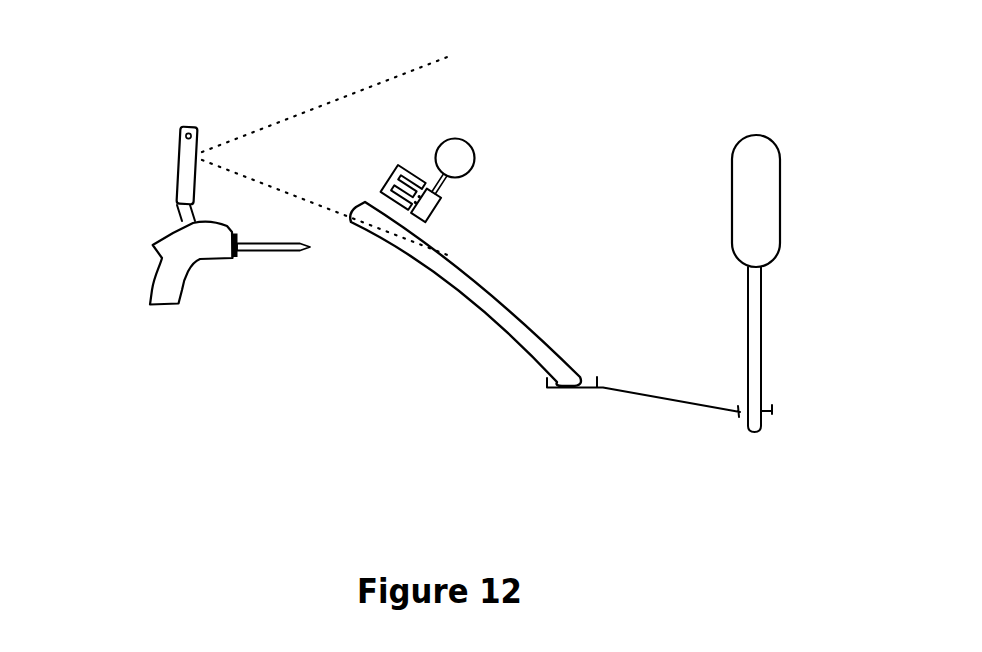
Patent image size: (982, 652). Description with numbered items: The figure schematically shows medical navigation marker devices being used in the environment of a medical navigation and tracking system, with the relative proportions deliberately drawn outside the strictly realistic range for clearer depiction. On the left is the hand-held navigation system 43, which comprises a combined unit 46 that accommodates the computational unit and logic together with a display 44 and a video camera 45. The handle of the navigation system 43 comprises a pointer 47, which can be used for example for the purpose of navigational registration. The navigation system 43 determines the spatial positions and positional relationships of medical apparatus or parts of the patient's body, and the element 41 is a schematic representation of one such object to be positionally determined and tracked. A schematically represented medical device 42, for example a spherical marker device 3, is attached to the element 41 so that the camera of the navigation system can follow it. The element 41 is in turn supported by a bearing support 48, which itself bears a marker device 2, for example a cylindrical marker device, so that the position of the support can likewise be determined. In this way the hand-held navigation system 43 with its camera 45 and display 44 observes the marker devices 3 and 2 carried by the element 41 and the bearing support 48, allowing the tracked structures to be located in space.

The marker device 2 is at (790, 248).
The spherical marker device 3 is at (476, 150).
The element 41 is at (478, 295).
The medical device 42 is at (432, 201).
The navigation system 43 is at (138, 247).
The display 44 is at (178, 163).
The video camera 45 is at (205, 155).
The combined unit 46 is at (190, 133).
The pointer 47 is at (293, 252).
The bearing support 48 is at (588, 397).